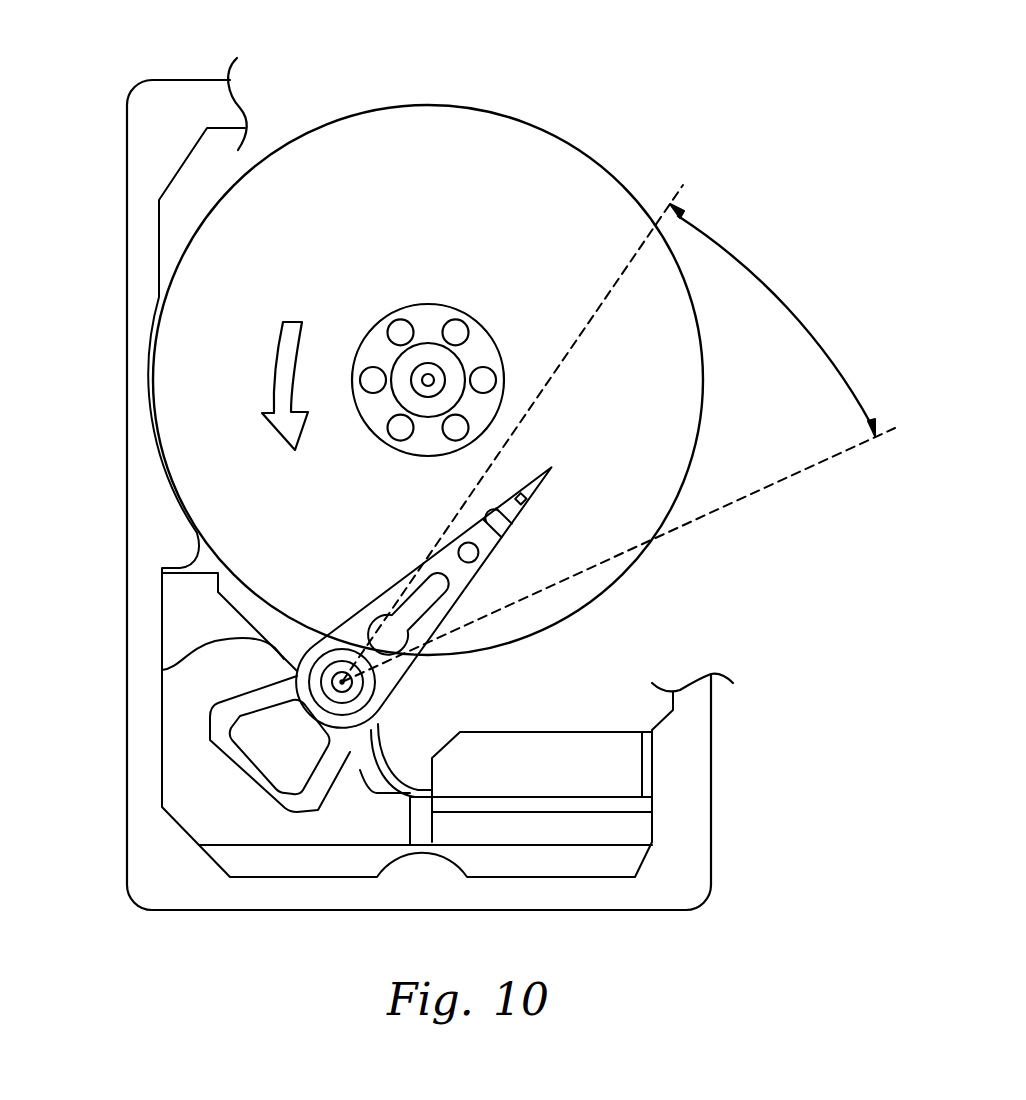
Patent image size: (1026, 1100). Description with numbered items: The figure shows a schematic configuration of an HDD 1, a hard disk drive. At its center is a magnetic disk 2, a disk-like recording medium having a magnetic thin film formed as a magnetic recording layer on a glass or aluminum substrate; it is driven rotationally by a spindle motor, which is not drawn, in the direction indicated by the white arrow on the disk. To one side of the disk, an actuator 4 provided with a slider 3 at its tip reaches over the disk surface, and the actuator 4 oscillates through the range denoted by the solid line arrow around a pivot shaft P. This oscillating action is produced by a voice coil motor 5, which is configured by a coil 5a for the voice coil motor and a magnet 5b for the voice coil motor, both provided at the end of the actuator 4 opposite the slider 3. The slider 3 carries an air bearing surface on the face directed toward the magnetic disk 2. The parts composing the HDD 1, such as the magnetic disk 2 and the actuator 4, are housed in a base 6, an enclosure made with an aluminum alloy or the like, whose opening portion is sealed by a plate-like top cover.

The HDD 1 is at (284, 68).
The magnetic disk 2 is at (438, 119).
The slider 3 is at (530, 497).
The actuator 4 is at (505, 518).
The voice coil motor 5 is at (179, 719).
The coil for a voice coil motor 5a is at (160, 670).
The magnet for the voice coil motor 5b is at (182, 708).
The base 6 is at (711, 788).
The pivot shaft P is at (352, 680).